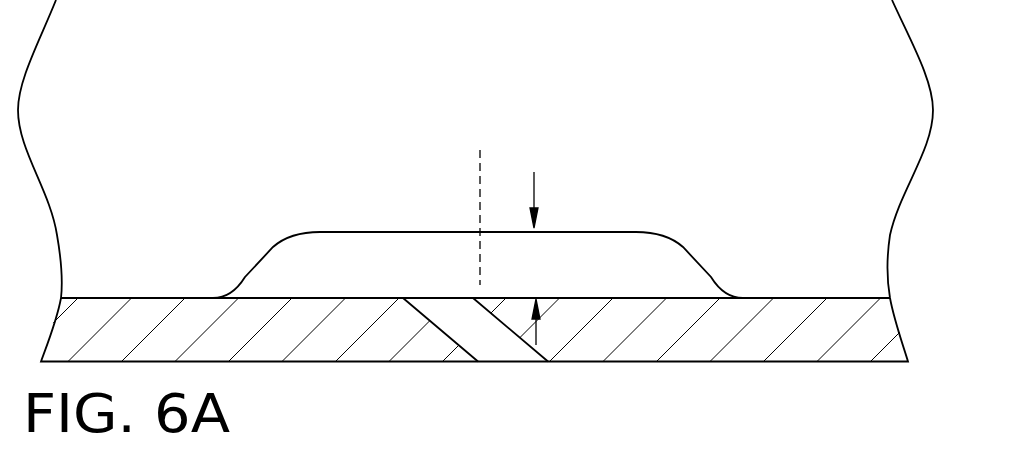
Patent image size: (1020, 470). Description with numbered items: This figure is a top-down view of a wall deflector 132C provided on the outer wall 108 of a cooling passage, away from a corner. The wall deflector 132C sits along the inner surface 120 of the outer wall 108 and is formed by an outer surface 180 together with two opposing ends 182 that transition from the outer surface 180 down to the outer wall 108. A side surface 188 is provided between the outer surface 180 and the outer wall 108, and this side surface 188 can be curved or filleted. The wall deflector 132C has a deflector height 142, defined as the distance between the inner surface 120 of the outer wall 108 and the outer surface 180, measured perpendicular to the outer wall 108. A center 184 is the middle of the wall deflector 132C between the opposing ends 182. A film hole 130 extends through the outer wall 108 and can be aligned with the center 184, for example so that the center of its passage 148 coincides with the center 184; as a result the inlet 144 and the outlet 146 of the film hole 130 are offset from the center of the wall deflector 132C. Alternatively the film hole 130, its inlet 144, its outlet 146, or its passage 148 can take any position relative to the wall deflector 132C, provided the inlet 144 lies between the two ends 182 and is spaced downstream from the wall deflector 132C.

The outer wall 108 is at (802, 372).
The inner surface 120 is at (790, 298).
The film hole 130 is at (426, 337).
The wall deflector 132C is at (694, 237).
The deflector height 142 is at (534, 185).
The inlet 144 is at (442, 298).
The outlet 146 is at (523, 362).
The passage 148 is at (480, 330).
The outer surface 180 is at (337, 231).
The opposing ends 182 is at (263, 262).
The center 184 is at (470, 219).
The side surface 188 is at (560, 255).